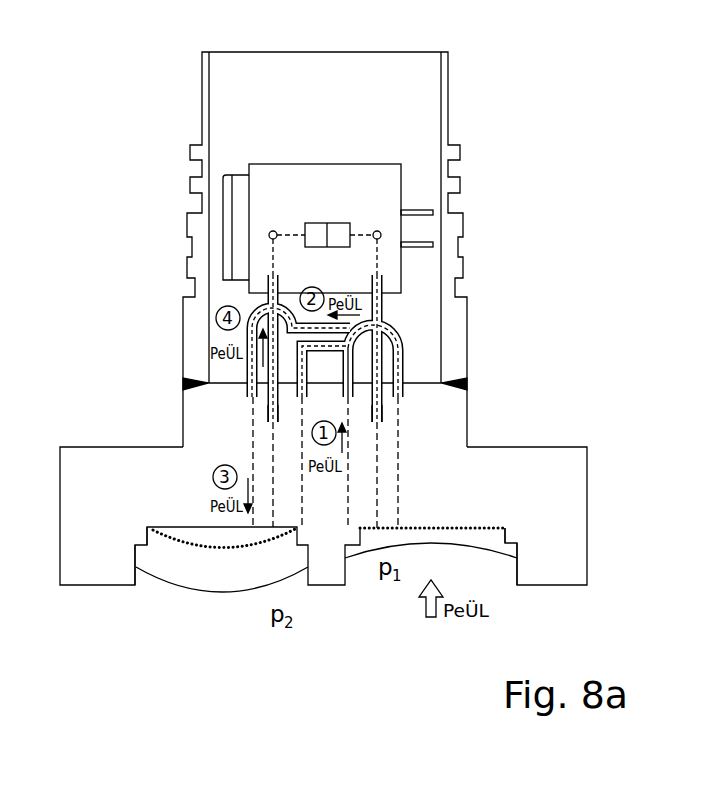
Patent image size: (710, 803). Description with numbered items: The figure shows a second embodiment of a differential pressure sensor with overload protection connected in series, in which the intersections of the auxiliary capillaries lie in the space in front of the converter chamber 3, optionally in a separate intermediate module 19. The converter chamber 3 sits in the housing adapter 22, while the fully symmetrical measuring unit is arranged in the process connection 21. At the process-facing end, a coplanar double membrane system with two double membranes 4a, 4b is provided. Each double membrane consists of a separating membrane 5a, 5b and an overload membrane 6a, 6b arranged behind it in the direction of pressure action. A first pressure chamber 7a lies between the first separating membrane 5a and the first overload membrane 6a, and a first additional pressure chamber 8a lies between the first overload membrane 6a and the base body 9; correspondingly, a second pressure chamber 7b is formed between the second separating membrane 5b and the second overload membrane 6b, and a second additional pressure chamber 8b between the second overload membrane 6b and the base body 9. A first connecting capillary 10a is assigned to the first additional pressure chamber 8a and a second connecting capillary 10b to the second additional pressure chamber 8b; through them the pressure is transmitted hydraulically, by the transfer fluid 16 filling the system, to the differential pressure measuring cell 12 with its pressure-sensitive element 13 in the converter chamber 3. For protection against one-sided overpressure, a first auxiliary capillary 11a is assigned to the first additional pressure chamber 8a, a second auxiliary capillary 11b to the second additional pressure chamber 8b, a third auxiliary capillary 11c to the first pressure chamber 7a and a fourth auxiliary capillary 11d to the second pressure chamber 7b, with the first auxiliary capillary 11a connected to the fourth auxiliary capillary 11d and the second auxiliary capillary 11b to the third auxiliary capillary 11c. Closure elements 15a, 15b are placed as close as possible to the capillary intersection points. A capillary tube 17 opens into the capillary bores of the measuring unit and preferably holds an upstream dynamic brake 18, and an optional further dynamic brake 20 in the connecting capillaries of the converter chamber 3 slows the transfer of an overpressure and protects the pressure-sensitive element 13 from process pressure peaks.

The converter chamber 3 is at (237, 215).
The first double membrane 4a is at (245, 604).
The second double membrane 4b is at (416, 618).
The first separating membrane 5a is at (200, 595).
The second separating membrane 5b is at (418, 543).
The first overload membrane 6a is at (170, 535).
The second overload membrane 6b is at (455, 527).
The first pressure chamber 7a is at (165, 557).
The second pressure chamber 7b is at (492, 540).
The first additional pressure chamber 8a is at (215, 548).
The second additional pressure chamber 8b is at (480, 527).
The base body 9 is at (561, 557).
The first connecting capillary 10a is at (273, 428).
The second connecting capillary 10b is at (393, 428).
The first auxiliary capillary 11a is at (253, 452).
The second auxiliary capillary 11b is at (398, 473).
The third auxiliary capillary 11c is at (302, 497).
The fourth auxiliary capillary 11d is at (348, 497).
The differential pressure measuring cell 12 is at (305, 208).
The pressure-sensitive element 13 is at (327, 222).
The first closure element 15a is at (273, 230).
The second closure element 15b is at (378, 230).
The transfer fluid 16 is at (385, 270).
The capillary tube 17 is at (267, 282).
The dynamic brake 18 is at (272, 412).
The intermediate module 19 is at (445, 327).
The dynamic brake 20 is at (460, 388).
The process connection 21 is at (588, 518).
The housing adapter 22 is at (432, 102).